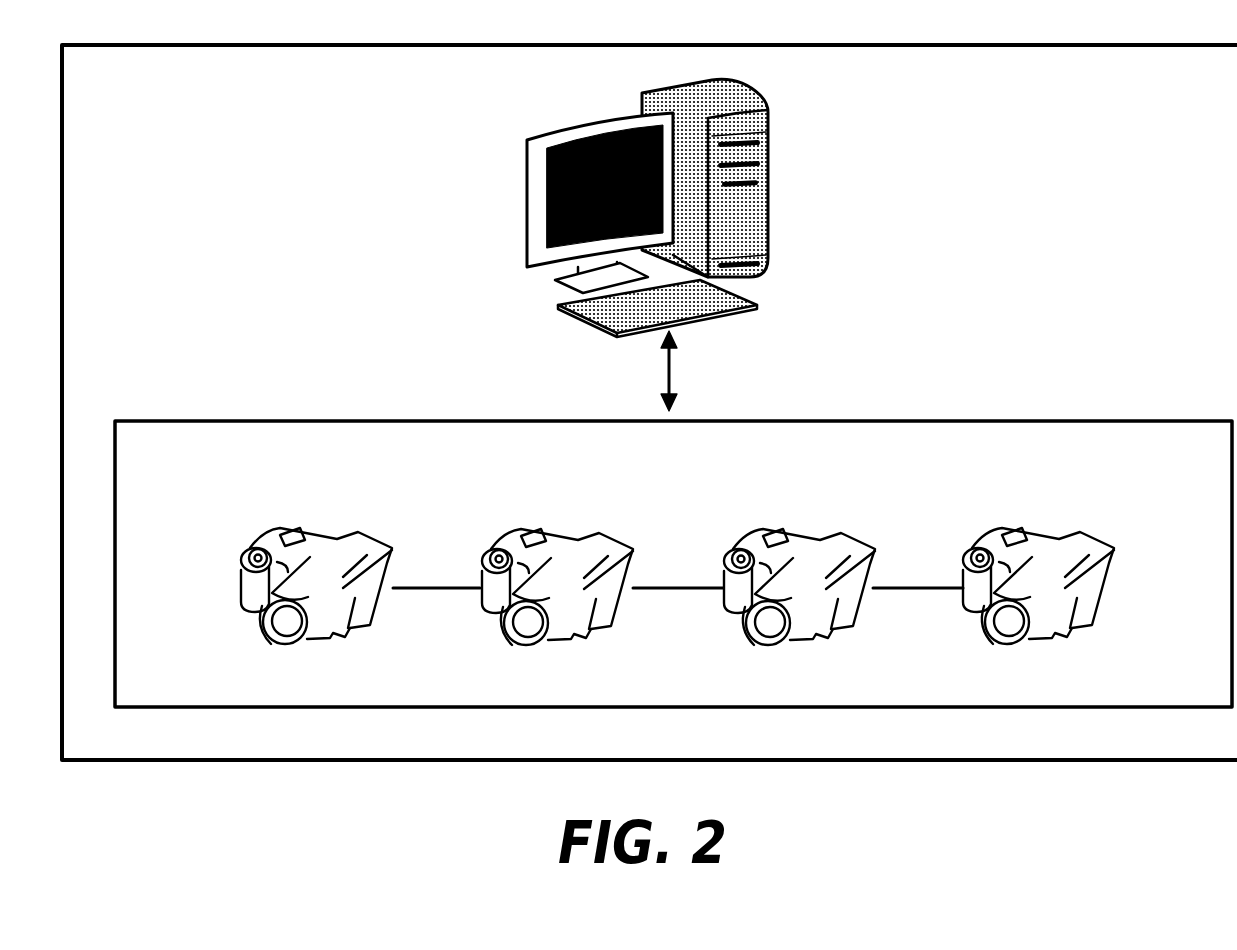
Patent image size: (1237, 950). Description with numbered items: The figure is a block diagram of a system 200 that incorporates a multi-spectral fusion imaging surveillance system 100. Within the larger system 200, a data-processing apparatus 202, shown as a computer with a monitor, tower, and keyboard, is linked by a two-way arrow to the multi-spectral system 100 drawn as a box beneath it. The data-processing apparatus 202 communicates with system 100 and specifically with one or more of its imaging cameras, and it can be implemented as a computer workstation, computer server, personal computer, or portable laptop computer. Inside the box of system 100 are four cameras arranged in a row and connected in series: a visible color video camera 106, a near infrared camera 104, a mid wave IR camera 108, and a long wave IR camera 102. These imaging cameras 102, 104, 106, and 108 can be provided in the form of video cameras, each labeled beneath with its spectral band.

The system 200 is at (167, 106).
The data-processing apparatus 202 is at (768, 178).
The multi-spectral fusion imaging surveillance system 100 is at (1222, 461).
The visible color video camera 106 is at (251, 551).
The near infrared (IR) camera 104 is at (492, 552).
The mid wave IR camera 108 is at (734, 552).
The long wave IR camera 102 is at (973, 551).